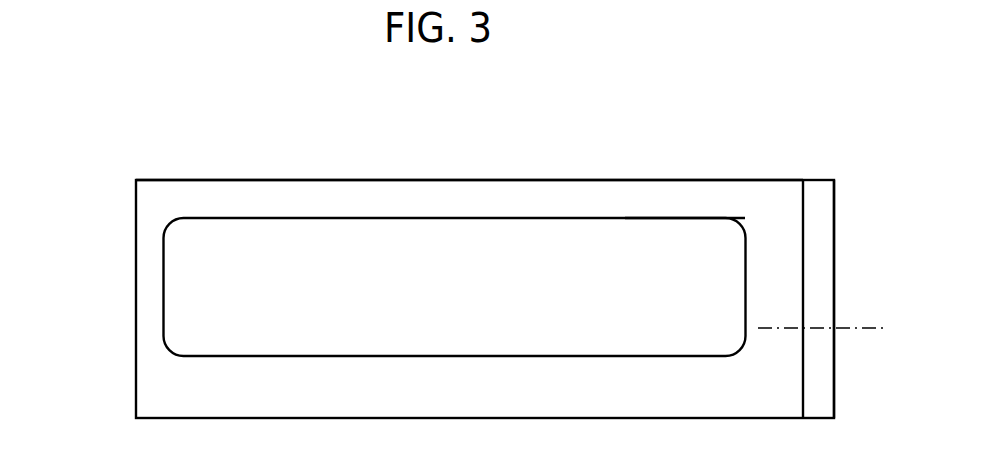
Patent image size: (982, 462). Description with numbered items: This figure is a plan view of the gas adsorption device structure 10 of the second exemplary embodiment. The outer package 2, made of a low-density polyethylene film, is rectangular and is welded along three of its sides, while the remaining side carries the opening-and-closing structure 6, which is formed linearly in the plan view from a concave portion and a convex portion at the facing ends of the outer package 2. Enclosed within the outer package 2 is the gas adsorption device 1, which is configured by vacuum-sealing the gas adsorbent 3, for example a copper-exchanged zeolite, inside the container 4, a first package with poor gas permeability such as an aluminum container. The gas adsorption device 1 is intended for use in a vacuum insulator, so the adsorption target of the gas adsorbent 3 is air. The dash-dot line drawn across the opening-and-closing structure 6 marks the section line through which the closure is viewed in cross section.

The gas adsorption device structure 10 is at (115, 310).
The gas adsorption device 1 is at (257, 218).
The outer package 2 is at (367, 200).
The gas adsorbent 3 is at (528, 263).
The container 4 is at (625, 217).
The opening-and-closing structure 6 is at (815, 265).